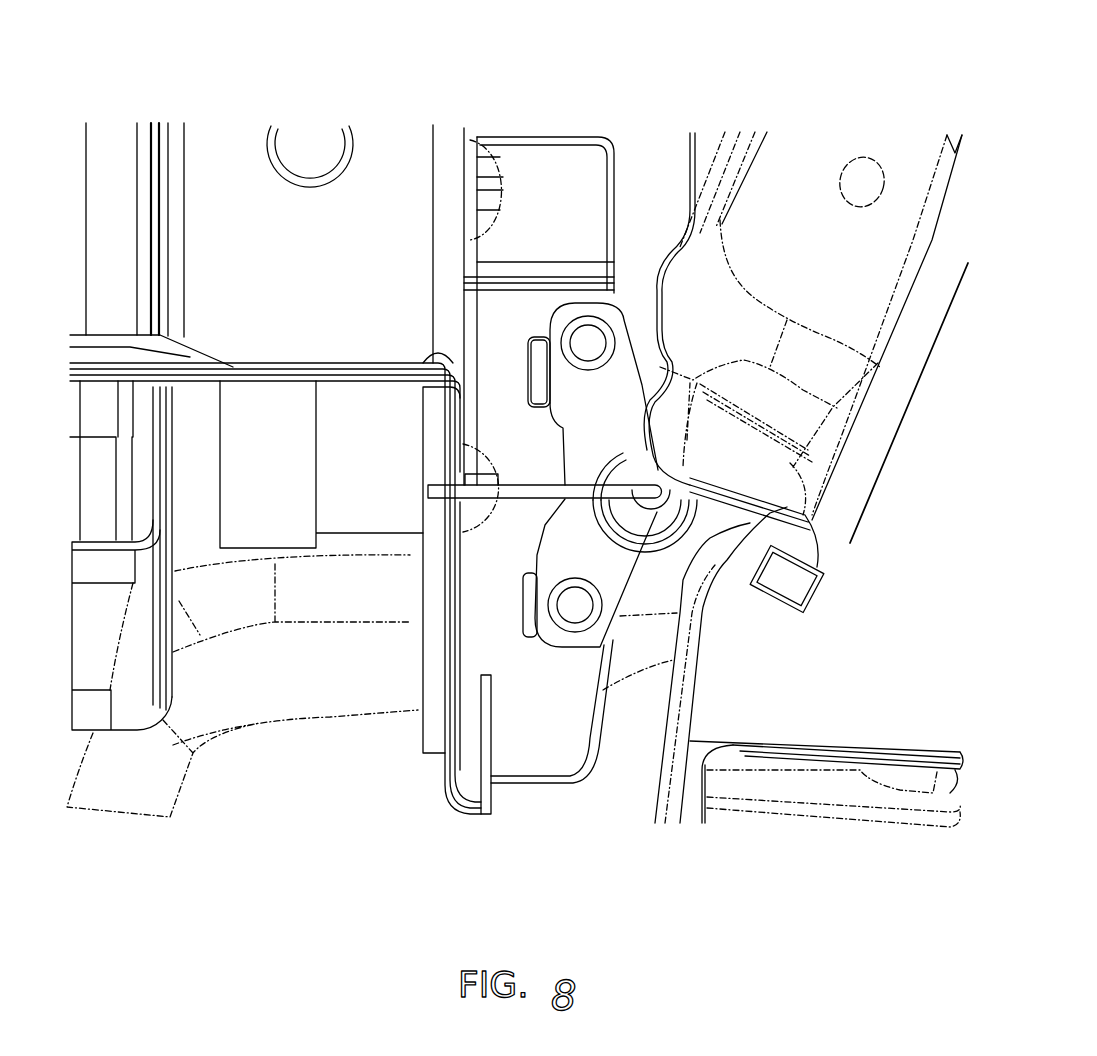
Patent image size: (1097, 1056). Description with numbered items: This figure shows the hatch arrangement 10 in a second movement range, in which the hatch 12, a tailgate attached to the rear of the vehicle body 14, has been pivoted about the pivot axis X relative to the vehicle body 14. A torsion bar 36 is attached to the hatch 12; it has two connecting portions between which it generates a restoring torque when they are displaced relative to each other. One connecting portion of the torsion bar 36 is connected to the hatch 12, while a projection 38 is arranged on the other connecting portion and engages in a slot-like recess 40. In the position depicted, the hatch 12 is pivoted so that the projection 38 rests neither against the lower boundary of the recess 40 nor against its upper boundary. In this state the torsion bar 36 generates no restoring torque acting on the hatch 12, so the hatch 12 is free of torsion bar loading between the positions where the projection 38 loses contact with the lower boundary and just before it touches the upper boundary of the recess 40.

The hatch arrangement 10 is at (653, 82).
The hatch 12 is at (778, 180).
The vehicle body 14 is at (230, 168).
The torsion bar 36 is at (660, 495).
The projection 38 is at (562, 494).
The recess 40 is at (464, 507).
The pivot axis X is at (664, 498).